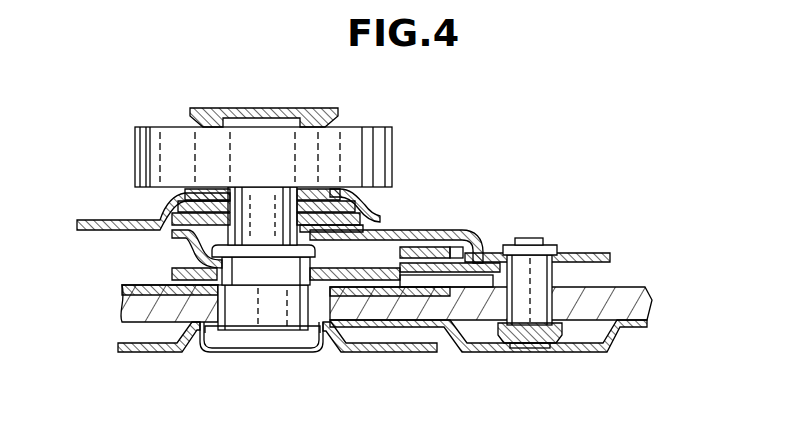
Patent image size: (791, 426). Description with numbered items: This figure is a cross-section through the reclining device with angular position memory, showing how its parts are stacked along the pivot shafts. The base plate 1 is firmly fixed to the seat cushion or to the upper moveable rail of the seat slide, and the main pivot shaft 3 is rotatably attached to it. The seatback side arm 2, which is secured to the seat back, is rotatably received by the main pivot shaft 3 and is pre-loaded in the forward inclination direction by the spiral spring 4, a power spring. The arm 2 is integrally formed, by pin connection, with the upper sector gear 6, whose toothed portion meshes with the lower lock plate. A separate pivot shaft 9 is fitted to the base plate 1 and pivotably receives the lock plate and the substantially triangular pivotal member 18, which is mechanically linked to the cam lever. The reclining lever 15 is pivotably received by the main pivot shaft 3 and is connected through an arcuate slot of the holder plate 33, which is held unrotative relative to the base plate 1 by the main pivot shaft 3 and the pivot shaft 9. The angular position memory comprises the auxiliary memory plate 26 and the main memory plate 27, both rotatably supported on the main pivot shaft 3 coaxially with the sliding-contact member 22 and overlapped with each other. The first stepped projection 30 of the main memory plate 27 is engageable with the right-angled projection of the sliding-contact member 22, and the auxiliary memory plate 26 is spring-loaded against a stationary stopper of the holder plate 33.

The base plate 1 is at (432, 340).
The seatback side arm 2 is at (333, 290).
The main pivot shaft 3 is at (247, 317).
The spiral spring 4 is at (372, 157).
The upper sector gear 6 is at (385, 315).
The pivot shaft 9 is at (537, 312).
The reclining lever 15 is at (365, 232).
The pivotal member 18 is at (580, 270).
The sliding-contact member 22 is at (183, 293).
The auxiliary memory plate 26 is at (345, 210).
The main memory plate 27 is at (178, 192).
The first stepped projection 30 is at (95, 218).
The holder plate 33 is at (470, 232).